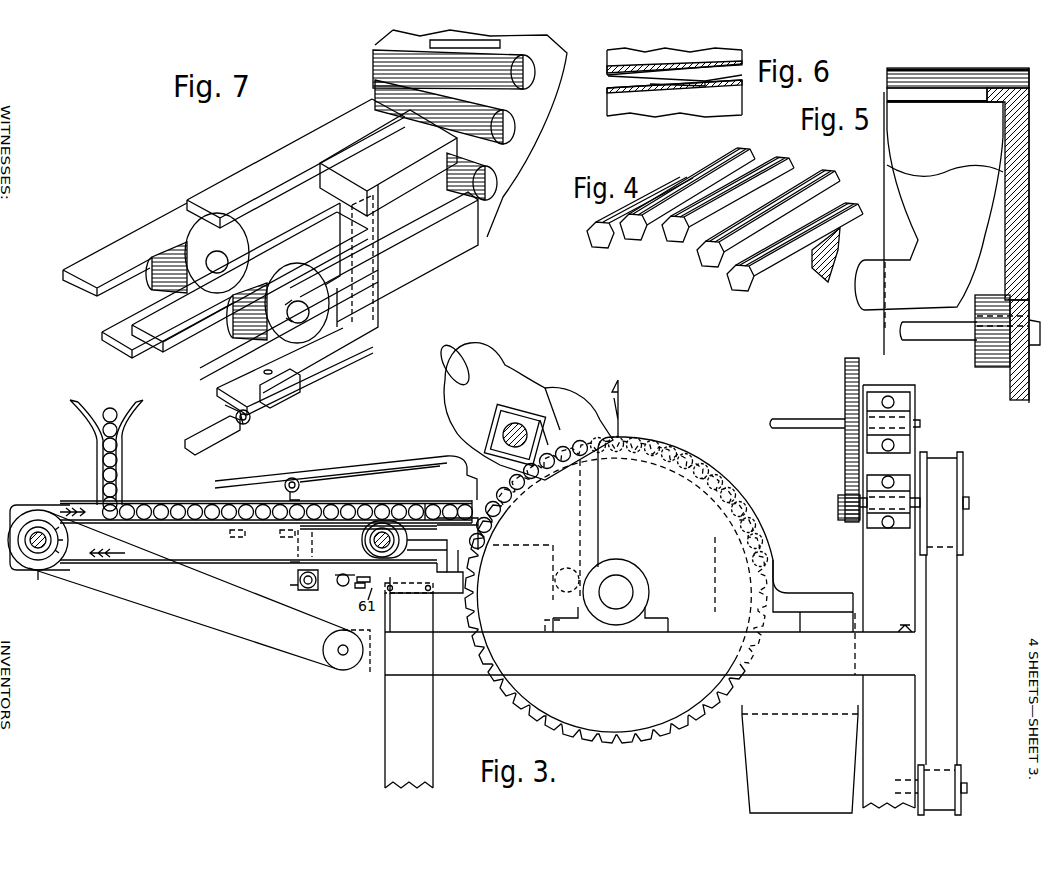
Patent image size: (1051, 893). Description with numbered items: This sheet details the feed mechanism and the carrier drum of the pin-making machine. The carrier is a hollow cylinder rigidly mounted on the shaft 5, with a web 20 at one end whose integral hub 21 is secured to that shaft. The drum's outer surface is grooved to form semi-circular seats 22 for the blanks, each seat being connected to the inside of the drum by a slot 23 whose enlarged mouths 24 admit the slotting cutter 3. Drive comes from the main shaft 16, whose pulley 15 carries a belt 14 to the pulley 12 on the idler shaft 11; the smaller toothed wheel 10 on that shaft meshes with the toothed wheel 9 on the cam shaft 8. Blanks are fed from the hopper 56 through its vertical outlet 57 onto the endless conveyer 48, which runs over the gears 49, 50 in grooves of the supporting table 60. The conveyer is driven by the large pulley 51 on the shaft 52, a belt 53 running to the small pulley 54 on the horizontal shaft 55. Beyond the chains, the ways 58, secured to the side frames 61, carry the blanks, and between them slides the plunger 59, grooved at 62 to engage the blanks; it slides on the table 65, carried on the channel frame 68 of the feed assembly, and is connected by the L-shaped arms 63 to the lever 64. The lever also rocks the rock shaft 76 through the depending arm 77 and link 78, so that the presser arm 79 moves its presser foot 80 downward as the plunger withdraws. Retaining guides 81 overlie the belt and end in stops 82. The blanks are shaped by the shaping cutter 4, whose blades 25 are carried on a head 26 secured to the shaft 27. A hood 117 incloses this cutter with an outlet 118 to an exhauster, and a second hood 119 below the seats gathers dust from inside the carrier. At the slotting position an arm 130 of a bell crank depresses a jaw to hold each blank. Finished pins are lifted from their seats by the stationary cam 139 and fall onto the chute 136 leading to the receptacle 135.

In FIG. 3, the slotting cutter 3 is at (622, 388).
In FIG. 3, the shaping cutter 4 is at (545, 420).
In FIG. 3, the shaft 5 is at (612, 600).
In FIG. 5, the shaft 5 is at (935, 340).
In FIG. 3, the cam shaft 8 is at (788, 428).
In FIG. 3, the toothed wheel 9 is at (845, 388).
In FIG. 3, the toothed wheel 10 is at (840, 522).
In FIG. 3, the idler shaft 11 is at (970, 503).
In FIG. 3, the pulley 12 is at (962, 537).
In FIG. 3, the belt 14 is at (940, 595).
In FIG. 3, the pulley 15 is at (963, 772).
In FIG. 3, the main shaft 16 is at (968, 788).
In FIG. 3, the web 20 is at (614, 595).
In FIG. 4, the web 20 is at (813, 252).
In FIG. 5, the web 20 is at (1005, 265).
In FIG. 5, the hub 21 is at (978, 368).
In FIG. 3, the seats 22 is at (638, 735).
In FIG. 4, the seats 22 is at (793, 168).
In FIG. 6, the seats 22 is at (741, 77).
In FIG. 5, the seats 22 is at (990, 72).
In FIG. 4, the slot 23 is at (790, 228).
In FIG. 6, the slot 23 is at (690, 84).
In FIG. 5, the slot 23 is at (929, 97).
In FIG. 4, the mouths 24 is at (722, 268).
In FIG. 6, the mouths 24 is at (612, 84).
In FIG. 3, the blades 25 is at (548, 428).
In FIG. 3, the head 26 is at (520, 410).
In FIG. 3, the shaft 27 is at (500, 435).
In FIG. 3, the endless conveyer 48 is at (140, 563).
In FIG. 7, the endless conveyer 48 is at (145, 226).
In FIG. 3, the gear 49 is at (62, 560).
In FIG. 3, the gear 50 is at (364, 541).
In FIG. 7, the gear 50 is at (160, 282).
In FIG. 3, the large pulley 51 is at (30, 560).
In FIG. 3, the shaft 52 is at (40, 512).
In FIG. 3, the belt 53 is at (160, 610).
In FIG. 3, the small pulley 54 is at (343, 660).
In FIG. 3, the horizontal shaft 55 is at (338, 652).
In FIG. 3, the hopper 56 is at (93, 445).
In FIG. 3, the outlet 57 is at (127, 502).
In FIG. 3, the ways 58 is at (413, 527).
In FIG. 7, the ways 58 is at (265, 165).
In FIG. 3, the plunger 59 is at (426, 559).
In FIG. 7, the plunger 59 is at (355, 153).
In FIG. 3, the supporting table 60 is at (200, 528).
In FIG. 3, the side frames 61 is at (13, 505).
In FIG. 7, the transverse groove 62 is at (427, 173).
In FIG. 3, the L-shaped arms 63 is at (362, 598).
In FIG. 3, the lever 64 is at (360, 588).
In FIG. 7, the lever 64 is at (300, 385).
In FIG. 3, the table 65 is at (427, 545).
In FIG. 7, the table 65 is at (420, 255).
In FIG. 7, the channel 68 is at (350, 330).
In FIG. 3, the rock shaft 76 is at (285, 481).
In FIG. 3, the depending arm 77 is at (292, 565).
In FIG. 3, the link 78 is at (310, 590).
In FIG. 7, the link 78 is at (225, 432).
In FIG. 3, the presser arm 79 is at (340, 470).
In FIG. 3, the presser foot 80 is at (472, 510).
In FIG. 3, the retaining guides 81 is at (357, 502).
In FIG. 3, the stops 82 is at (427, 518).
In FIG. 3, the hood 117 is at (487, 392).
In FIG. 7, the hood 117 is at (470, 133).
In FIG. 3, the outlet 118 is at (454, 358).
In FIG. 3, the second hood 119 is at (584, 482).
In FIG. 5, the second hood 119 is at (912, 178).
In FIG. 3, the arm 130 is at (748, 535).
In FIG. 3, the receptacle 135 is at (752, 758).
In FIG. 3, the chute 136 is at (748, 715).
In FIG. 3, the stationary cam 139 is at (788, 592).